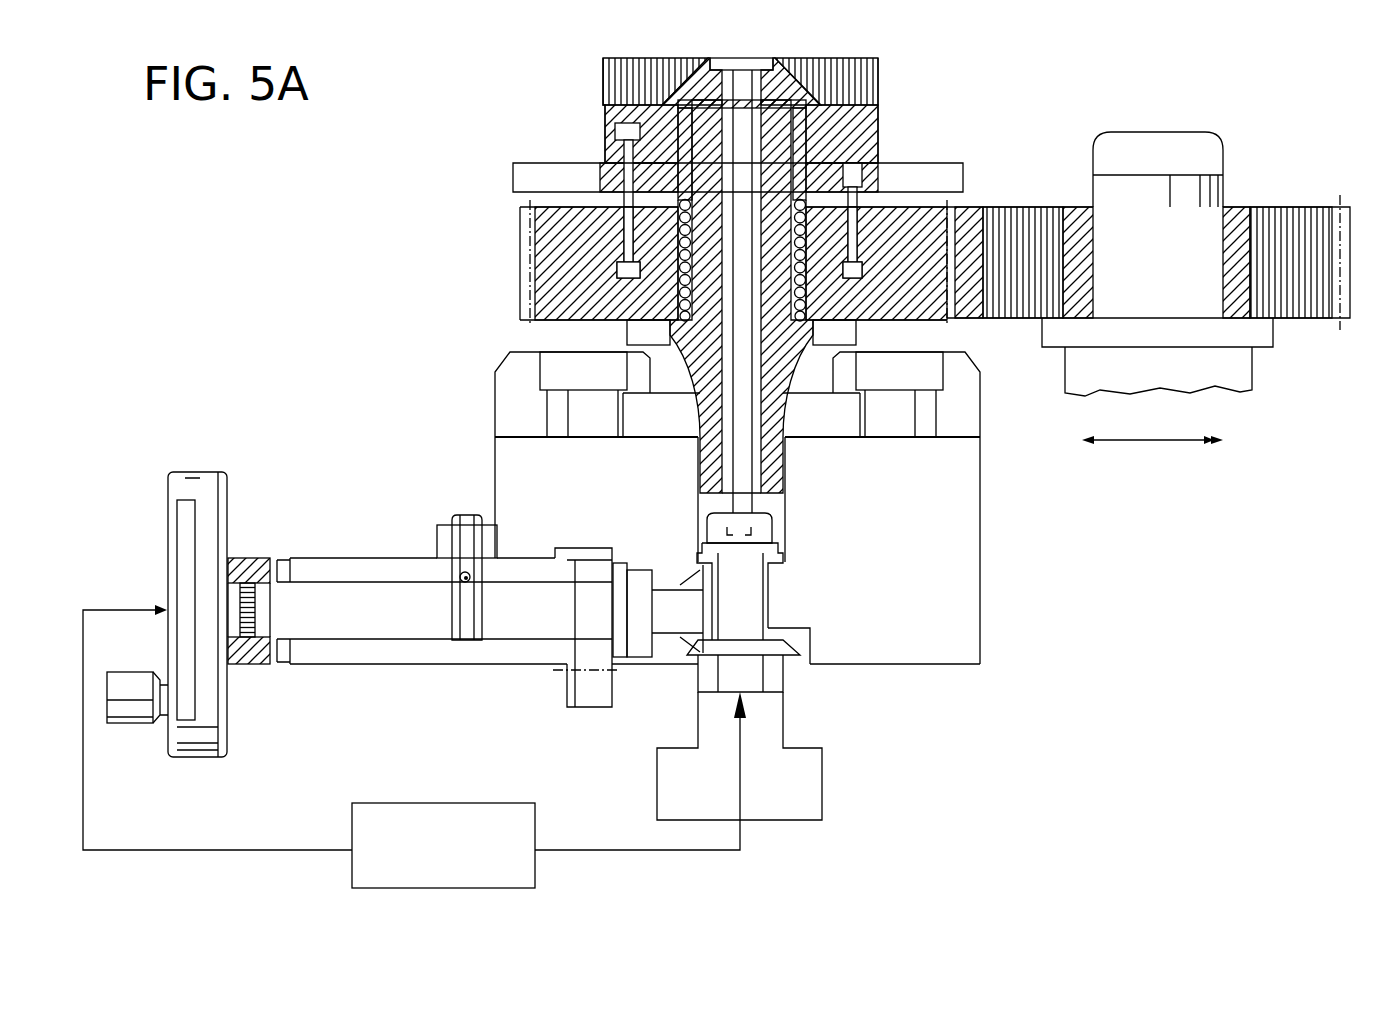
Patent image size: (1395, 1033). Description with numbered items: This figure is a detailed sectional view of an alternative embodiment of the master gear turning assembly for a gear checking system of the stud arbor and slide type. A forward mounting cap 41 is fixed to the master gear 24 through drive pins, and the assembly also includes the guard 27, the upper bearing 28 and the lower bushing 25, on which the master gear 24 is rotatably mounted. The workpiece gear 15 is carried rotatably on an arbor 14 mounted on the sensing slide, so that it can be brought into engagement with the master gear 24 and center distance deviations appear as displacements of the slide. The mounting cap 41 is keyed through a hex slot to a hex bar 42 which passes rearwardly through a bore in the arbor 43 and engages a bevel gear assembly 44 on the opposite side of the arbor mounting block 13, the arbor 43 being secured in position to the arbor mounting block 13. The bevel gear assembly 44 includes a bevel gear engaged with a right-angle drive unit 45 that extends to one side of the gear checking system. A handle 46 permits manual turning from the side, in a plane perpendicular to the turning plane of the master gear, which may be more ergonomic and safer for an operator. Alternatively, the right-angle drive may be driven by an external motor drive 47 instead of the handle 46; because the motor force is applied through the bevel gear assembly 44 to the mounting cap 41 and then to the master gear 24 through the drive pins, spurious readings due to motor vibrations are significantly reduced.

The arbor mounting block 13 is at (982, 573).
The arbor 14 is at (1157, 147).
The workpiece gear 15 is at (1010, 226).
The master gear 24 is at (545, 257).
The lower bushing 25 is at (800, 298).
The guard 27 is at (960, 164).
The upper bearing 28 is at (812, 142).
The forward mounting cap 41 is at (607, 78).
The hex bar 42 is at (740, 455).
The arbor 43 is at (637, 323).
The bevel gear assembly 44 is at (798, 589).
The right-angle drive unit 45 is at (428, 508).
The handle 46 is at (212, 744).
The external motor drive 47 is at (468, 805).